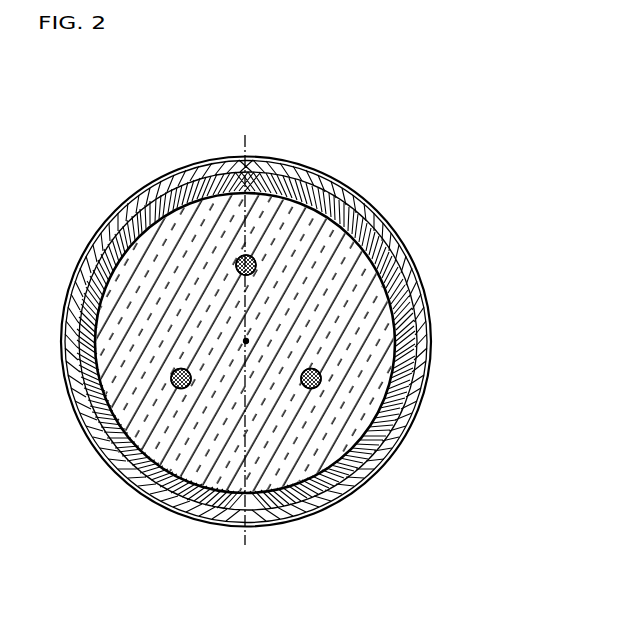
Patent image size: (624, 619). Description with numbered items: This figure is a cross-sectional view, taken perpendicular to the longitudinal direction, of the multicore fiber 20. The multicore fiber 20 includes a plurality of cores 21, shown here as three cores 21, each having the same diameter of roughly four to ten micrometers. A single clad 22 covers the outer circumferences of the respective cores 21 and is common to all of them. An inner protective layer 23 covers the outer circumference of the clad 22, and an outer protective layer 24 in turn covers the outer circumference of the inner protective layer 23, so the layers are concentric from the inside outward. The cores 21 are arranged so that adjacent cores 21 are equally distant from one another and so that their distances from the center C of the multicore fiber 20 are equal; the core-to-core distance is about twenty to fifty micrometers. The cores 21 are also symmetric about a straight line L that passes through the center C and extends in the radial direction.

The multicore fiber 20 is at (427, 121).
The cores 21 is at (325, 170).
The clad 22 is at (371, 346).
The inner protective layer 23 is at (402, 385).
The outer protective layer 24 is at (421, 412).
The center C is at (246, 341).
The straight line L is at (243, 329).